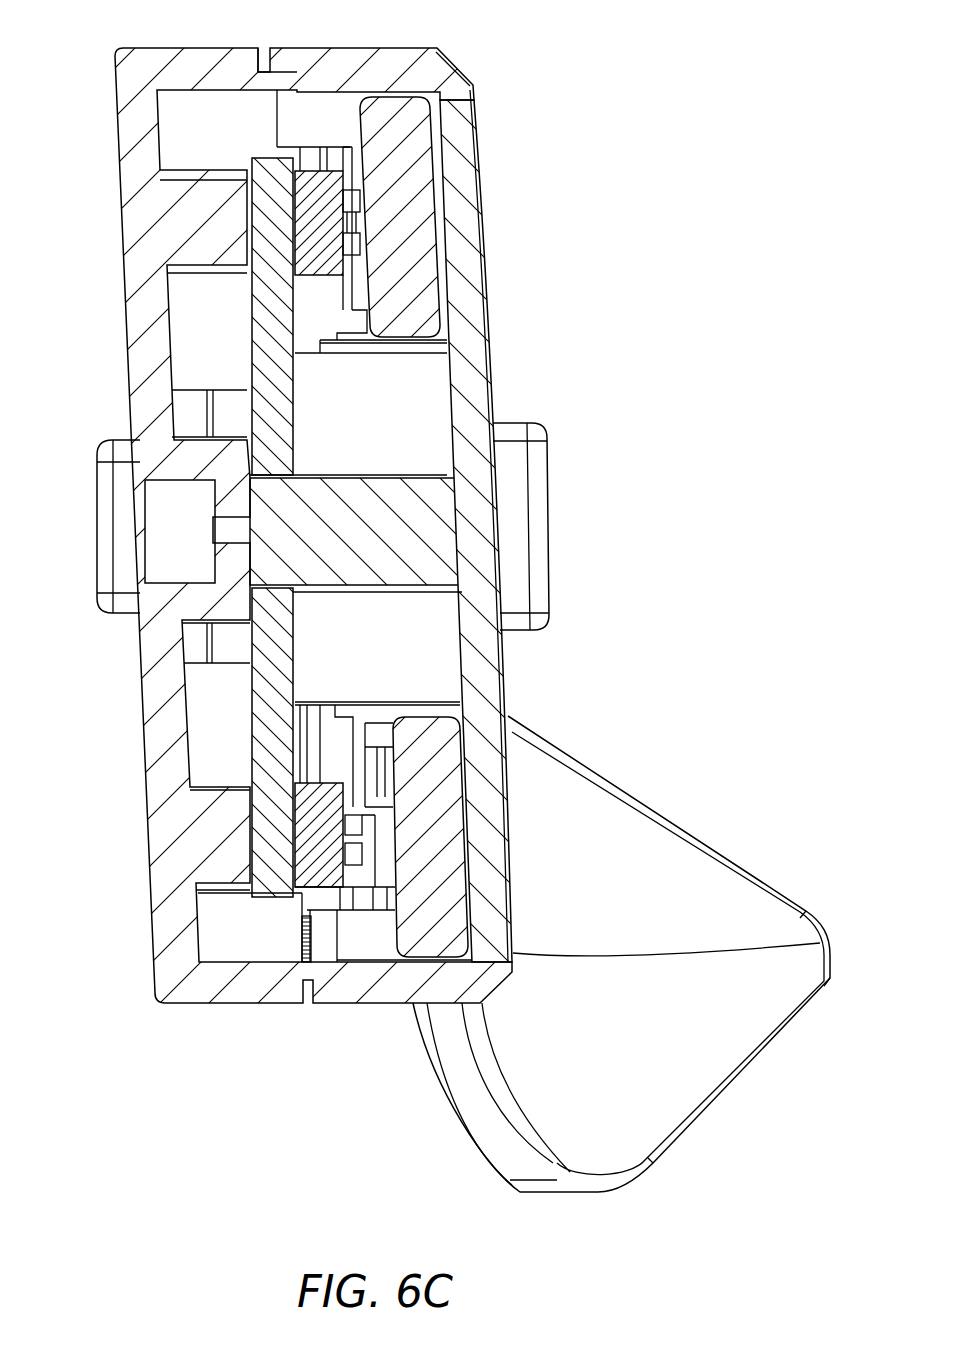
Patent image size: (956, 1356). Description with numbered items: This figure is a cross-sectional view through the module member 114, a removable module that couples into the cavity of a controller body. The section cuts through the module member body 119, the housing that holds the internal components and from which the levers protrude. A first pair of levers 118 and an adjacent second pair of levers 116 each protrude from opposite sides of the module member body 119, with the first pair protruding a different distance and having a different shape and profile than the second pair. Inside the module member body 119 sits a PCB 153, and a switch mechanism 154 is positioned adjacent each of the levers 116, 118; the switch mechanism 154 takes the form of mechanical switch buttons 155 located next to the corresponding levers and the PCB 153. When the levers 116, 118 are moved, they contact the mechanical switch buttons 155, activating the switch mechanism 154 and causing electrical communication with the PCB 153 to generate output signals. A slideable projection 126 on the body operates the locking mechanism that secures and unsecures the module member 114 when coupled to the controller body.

The module member 114 is at (648, 162).
The second pair of levers 116 is at (424, 775).
The first pair of levers 118 is at (395, 152).
The module member body 119 is at (472, 278).
The slideable projection 126 is at (537, 518).
The PCB 153 is at (270, 225).
The switch mechanism 154 is at (313, 190).
The mechanical switch buttons 155 is at (360, 222).